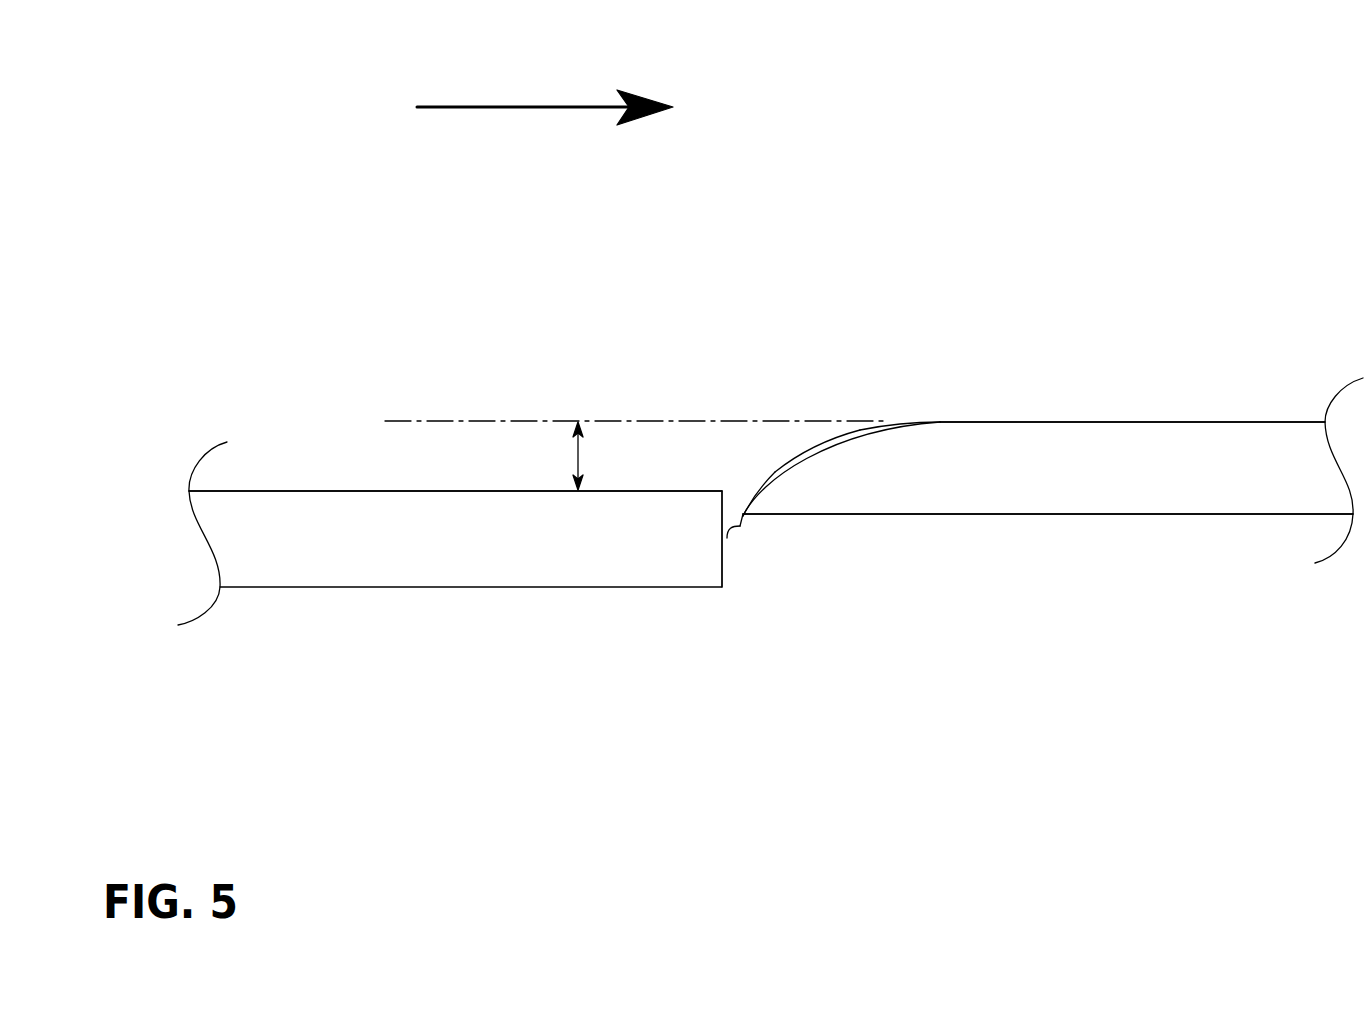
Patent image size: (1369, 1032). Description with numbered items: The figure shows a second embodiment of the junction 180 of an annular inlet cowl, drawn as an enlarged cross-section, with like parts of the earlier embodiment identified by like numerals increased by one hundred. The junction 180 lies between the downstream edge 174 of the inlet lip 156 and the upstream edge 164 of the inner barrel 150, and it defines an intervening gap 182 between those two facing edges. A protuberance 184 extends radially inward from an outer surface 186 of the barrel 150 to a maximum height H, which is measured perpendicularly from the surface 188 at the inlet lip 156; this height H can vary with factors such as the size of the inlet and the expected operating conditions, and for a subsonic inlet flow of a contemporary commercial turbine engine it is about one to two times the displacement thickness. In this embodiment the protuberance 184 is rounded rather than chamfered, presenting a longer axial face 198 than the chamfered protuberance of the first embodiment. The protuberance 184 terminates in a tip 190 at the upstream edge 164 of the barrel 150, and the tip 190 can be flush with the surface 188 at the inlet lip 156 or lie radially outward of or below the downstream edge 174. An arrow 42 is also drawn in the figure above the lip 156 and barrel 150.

The direction of travel 42 is at (545, 106).
The inner barrel 150 is at (997, 460).
The inlet lip 156 is at (490, 530).
The upstream edge 164 is at (774, 472).
The downstream edge 174 is at (722, 521).
The junction 180 is at (738, 562).
The intervening gap 182 is at (740, 526).
The protuberance 184 is at (824, 488).
The outer surface 186 is at (935, 515).
The surface 188 is at (352, 490).
The tip 190 is at (763, 505).
The axial face 198 is at (838, 440).
The maximum height H is at (580, 455).